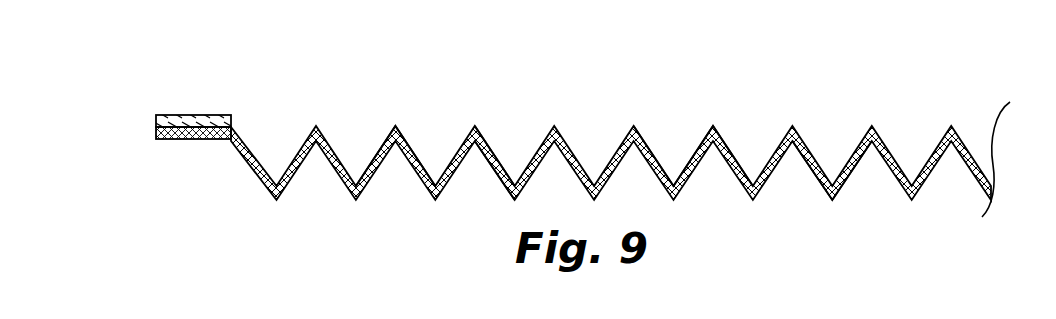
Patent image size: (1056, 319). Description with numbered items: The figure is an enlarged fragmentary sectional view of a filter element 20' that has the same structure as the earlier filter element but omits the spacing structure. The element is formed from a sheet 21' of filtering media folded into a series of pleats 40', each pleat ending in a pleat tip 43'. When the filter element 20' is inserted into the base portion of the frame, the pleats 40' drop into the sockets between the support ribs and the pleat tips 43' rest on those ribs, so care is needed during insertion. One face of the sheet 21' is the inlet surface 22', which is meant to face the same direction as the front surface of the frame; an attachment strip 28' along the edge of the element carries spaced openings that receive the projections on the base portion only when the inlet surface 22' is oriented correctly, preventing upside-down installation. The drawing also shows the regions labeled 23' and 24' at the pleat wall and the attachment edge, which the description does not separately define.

The filter element 20' is at (620, 127).
The sheet 21' is at (522, 137).
The inlet surface 22' is at (663, 135).
The pleat inner surface 23' is at (486, 189).
The end frame member 24' is at (182, 156).
The attachment strip 28' is at (177, 99).
The pleat 40' is at (836, 194).
The pleat tip 43' is at (554, 177).